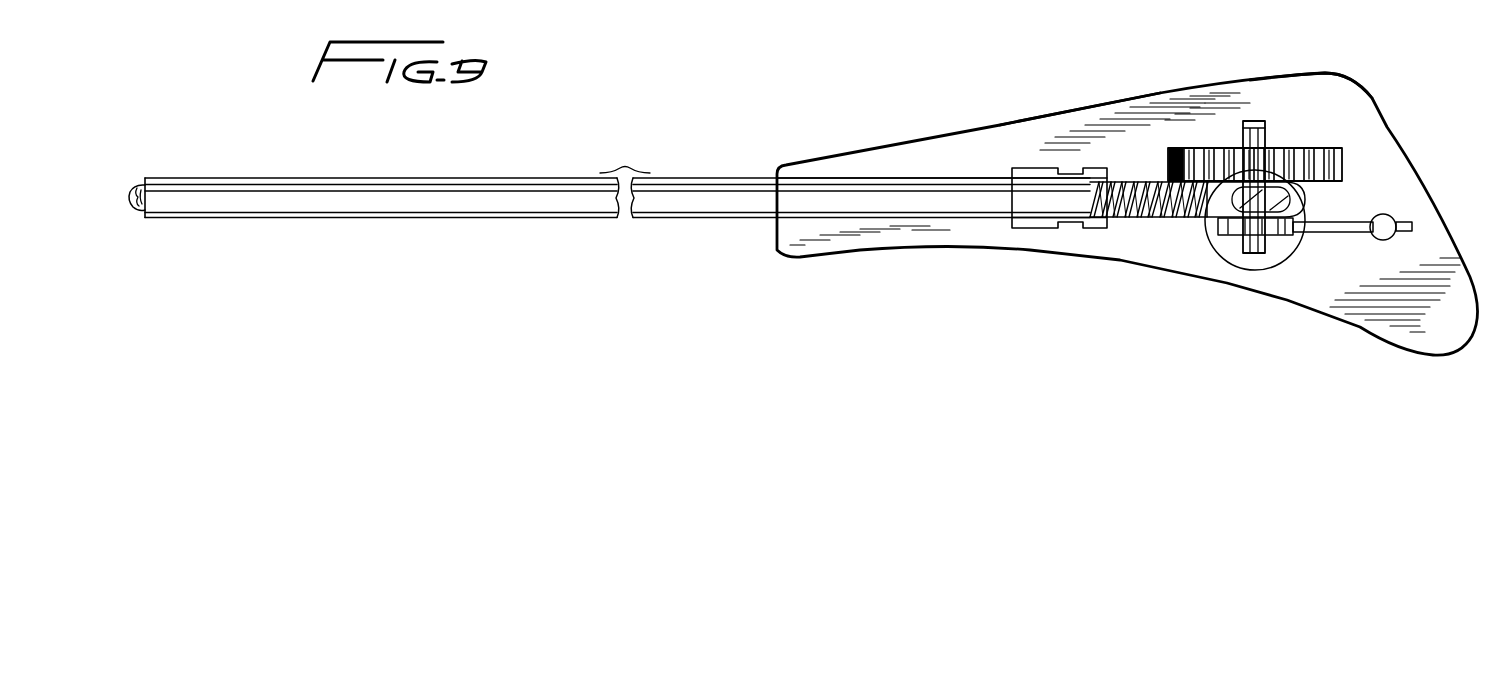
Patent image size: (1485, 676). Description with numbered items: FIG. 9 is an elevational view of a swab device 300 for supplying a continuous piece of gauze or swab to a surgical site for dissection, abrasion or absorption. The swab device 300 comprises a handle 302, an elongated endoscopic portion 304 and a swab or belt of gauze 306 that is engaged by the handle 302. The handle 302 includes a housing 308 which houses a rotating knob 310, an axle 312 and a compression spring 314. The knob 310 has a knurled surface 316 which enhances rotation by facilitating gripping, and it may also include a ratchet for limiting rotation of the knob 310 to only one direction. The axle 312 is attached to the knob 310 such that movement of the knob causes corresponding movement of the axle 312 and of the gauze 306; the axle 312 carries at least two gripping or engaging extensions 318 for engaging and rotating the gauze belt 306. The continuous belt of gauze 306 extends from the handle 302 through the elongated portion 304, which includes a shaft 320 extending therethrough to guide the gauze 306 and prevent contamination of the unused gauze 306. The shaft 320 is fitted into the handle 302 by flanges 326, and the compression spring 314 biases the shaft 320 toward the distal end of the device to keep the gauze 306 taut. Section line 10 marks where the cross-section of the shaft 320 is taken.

The section line 10- 10 is at (190, 268).
The swab device 300 is at (815, 128).
The handle 302 is at (1033, 252).
The elongated endoscopic portion 304 is at (548, 177).
The swab or belt of gauze 306 is at (133, 190).
The housing 308 is at (1131, 100).
The rotating knob 310 is at (1305, 147).
The axle 312 is at (1253, 254).
The compression spring 314 is at (1135, 222).
The knurled surface 316 is at (1343, 160).
The gripping or engaging extensions 318 is at (1275, 200).
The shaft 320 is at (830, 180).
The flanges 326 is at (1068, 172).